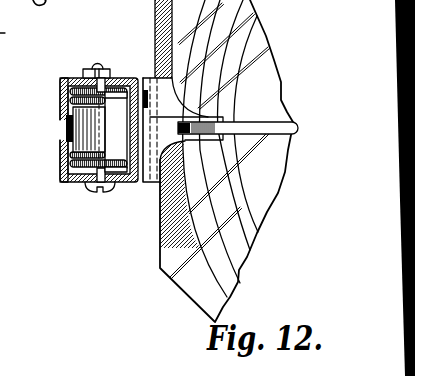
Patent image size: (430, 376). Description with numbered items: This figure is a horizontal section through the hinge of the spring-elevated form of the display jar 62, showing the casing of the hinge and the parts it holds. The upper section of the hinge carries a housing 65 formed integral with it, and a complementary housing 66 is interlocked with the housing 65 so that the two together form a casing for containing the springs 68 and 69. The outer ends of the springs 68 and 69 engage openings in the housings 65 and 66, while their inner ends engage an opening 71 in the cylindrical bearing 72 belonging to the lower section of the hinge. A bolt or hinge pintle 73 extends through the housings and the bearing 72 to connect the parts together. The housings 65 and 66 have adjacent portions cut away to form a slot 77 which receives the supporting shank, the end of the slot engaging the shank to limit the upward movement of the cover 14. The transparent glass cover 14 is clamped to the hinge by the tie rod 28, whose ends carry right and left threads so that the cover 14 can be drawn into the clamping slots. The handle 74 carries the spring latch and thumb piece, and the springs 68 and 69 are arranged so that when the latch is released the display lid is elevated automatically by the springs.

The transparent cover 14 is at (268, 34).
The tie rod 28 is at (284, 125).
The display jar 62 is at (197, 229).
The housing 65 is at (72, 182).
The complementary housing 66 is at (60, 88).
The spring 68 is at (62, 167).
The spring 69 is at (125, 84).
The opening 71 is at (95, 127).
The cylindrical bearing 72 is at (62, 141).
The hinge pintle 73 is at (102, 191).
The handle 74 is at (3, 79).
The slot 77 is at (66, 122).